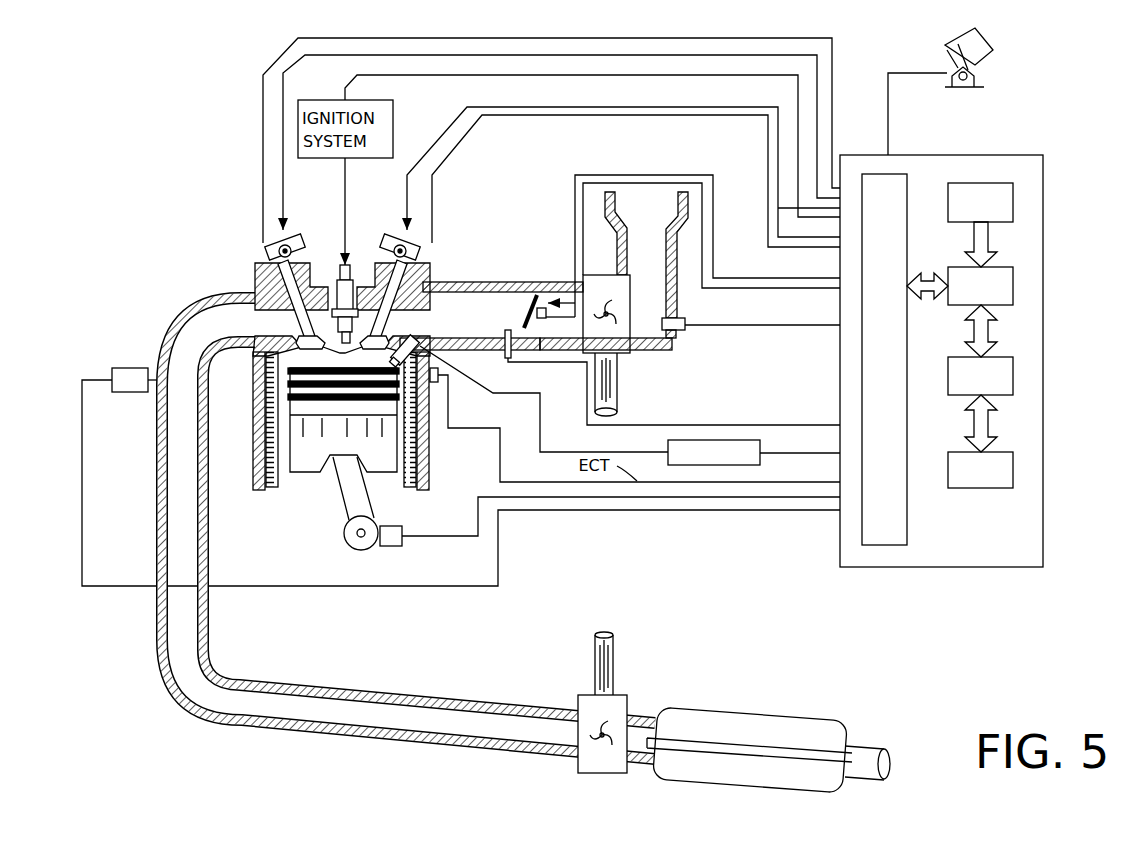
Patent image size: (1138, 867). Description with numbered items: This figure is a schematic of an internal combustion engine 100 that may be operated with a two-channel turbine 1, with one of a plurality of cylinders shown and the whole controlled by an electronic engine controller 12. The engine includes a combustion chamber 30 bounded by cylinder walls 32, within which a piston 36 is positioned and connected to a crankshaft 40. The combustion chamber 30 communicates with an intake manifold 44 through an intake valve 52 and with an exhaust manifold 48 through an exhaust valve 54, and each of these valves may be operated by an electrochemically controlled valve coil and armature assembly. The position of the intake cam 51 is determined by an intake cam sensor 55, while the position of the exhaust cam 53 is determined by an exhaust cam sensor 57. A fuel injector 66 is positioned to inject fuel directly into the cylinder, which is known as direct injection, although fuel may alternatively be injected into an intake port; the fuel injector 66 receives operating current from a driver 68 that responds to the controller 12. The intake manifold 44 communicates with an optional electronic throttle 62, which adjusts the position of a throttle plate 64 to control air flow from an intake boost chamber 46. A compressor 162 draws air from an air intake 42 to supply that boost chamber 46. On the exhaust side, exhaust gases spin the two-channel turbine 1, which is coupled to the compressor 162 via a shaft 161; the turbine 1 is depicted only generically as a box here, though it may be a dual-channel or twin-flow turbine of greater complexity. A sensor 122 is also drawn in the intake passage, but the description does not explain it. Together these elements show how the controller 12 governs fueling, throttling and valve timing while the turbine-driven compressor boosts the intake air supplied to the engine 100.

The two-channel turbine 1 is at (583, 694).
The electronic engine controller 12 is at (1043, 157).
The combustion chamber 30 is at (343, 350).
The cylinder walls 32 is at (290, 479).
The piston 36 is at (327, 445).
The crankshaft 40 is at (349, 546).
The air intake 42 is at (632, 244).
The intake manifold 44 is at (448, 324).
The intake boost chamber 46 is at (551, 335).
The exhaust manifold 48 is at (214, 329).
The intake cam 51 is at (395, 236).
The intake valve 52 is at (380, 328).
The exhaust cam 53 is at (298, 236).
The exhaust valve 54 is at (266, 293).
The intake cam sensor 55 is at (418, 246).
The exhaust cam sensor 57 is at (270, 247).
The electronic throttle 62 is at (517, 291).
The throttle plate 64 is at (533, 300).
The fuel injector 66 is at (434, 362).
The driver 68 is at (690, 465).
The internal combustion engine 100 is at (200, 222).
The pressure sensor 122 is at (507, 331).
The shaft 161 is at (618, 396).
The compressor 162 is at (606, 275).